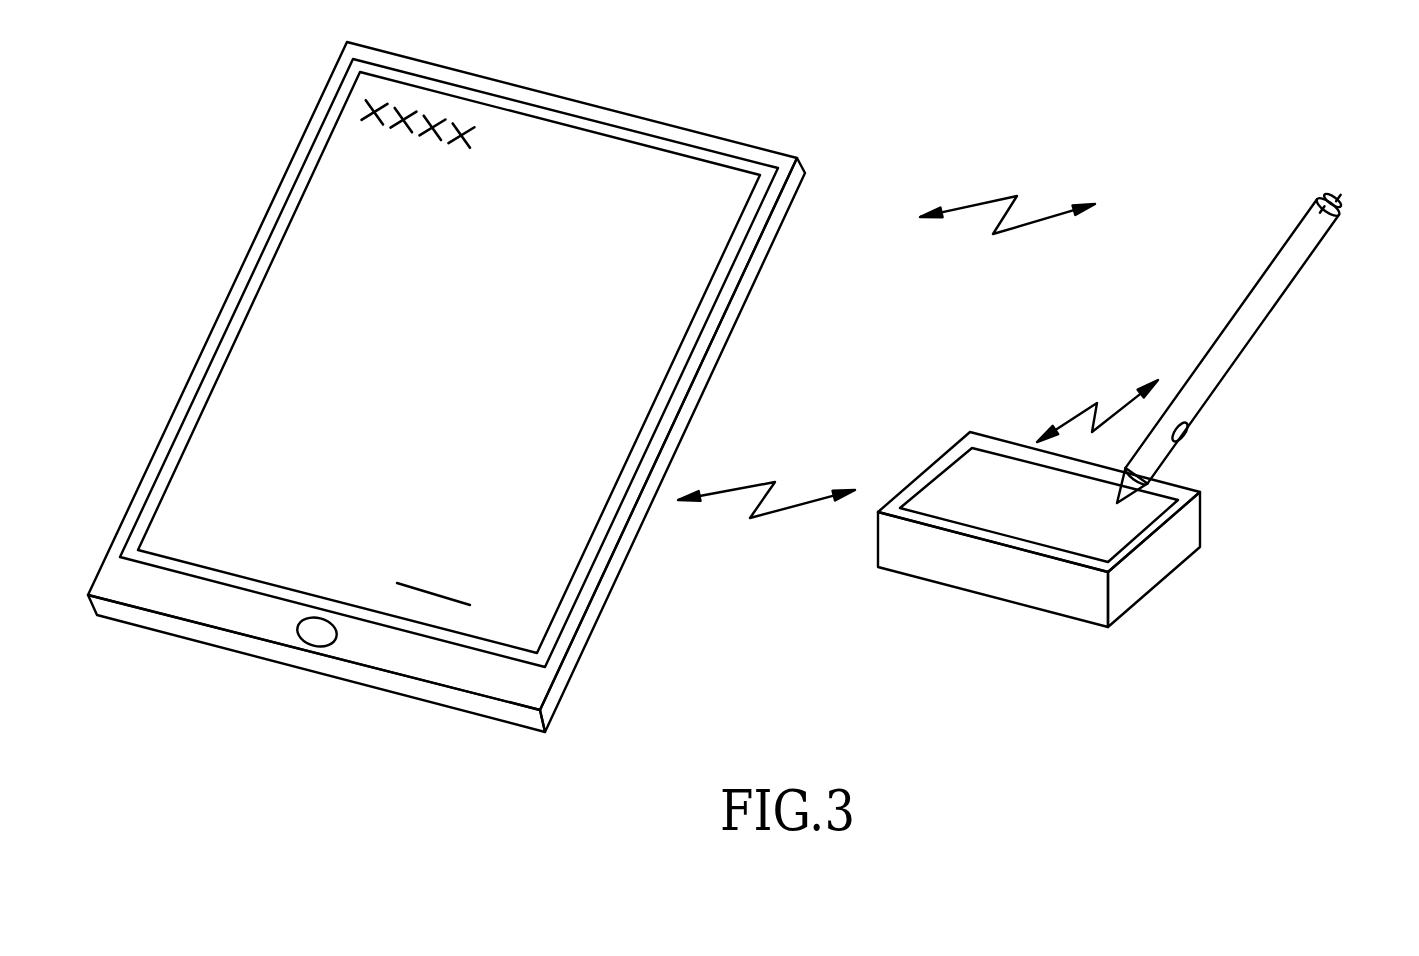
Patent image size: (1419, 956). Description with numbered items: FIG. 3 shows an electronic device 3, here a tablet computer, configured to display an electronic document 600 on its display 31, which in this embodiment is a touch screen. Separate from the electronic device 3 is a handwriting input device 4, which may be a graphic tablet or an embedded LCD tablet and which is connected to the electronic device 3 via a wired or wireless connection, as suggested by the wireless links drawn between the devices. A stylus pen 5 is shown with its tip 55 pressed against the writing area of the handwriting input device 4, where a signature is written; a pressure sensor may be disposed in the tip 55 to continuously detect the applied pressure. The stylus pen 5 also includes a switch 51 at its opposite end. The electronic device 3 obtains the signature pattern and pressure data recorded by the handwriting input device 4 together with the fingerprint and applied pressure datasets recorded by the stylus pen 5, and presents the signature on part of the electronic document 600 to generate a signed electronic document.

The electronic device 3 is at (446, 400).
The display 31 is at (208, 367).
The electronic document 600 is at (588, 170).
The handwriting input device 4 is at (1039, 565).
The stylus pen 5 is at (1268, 418).
The switch 51 is at (1342, 202).
The tip 55 is at (1127, 490).